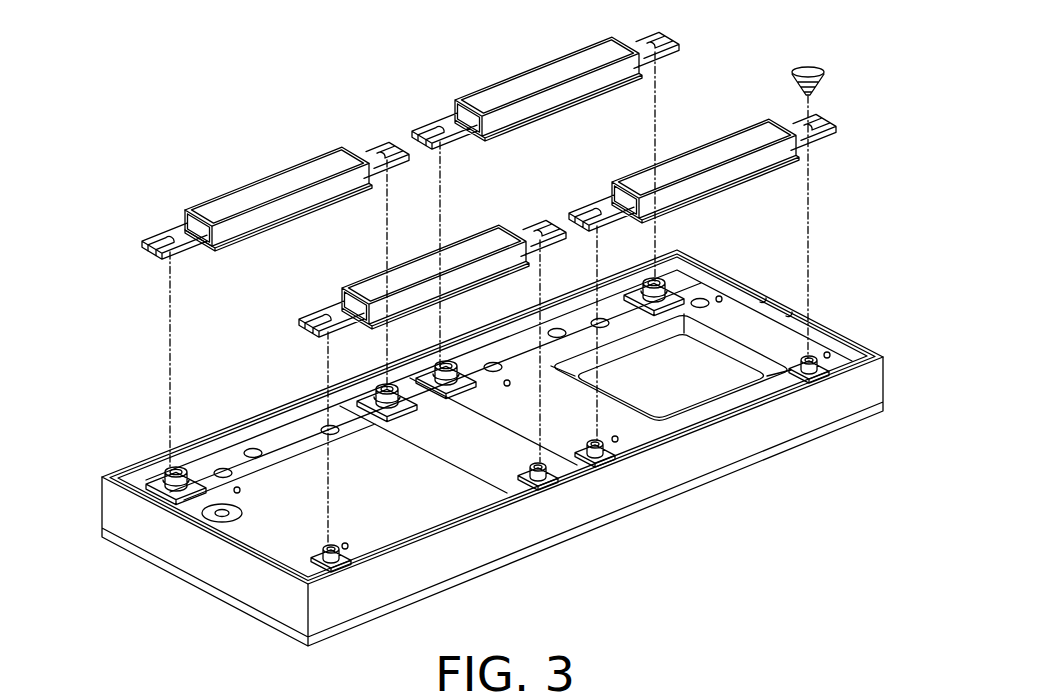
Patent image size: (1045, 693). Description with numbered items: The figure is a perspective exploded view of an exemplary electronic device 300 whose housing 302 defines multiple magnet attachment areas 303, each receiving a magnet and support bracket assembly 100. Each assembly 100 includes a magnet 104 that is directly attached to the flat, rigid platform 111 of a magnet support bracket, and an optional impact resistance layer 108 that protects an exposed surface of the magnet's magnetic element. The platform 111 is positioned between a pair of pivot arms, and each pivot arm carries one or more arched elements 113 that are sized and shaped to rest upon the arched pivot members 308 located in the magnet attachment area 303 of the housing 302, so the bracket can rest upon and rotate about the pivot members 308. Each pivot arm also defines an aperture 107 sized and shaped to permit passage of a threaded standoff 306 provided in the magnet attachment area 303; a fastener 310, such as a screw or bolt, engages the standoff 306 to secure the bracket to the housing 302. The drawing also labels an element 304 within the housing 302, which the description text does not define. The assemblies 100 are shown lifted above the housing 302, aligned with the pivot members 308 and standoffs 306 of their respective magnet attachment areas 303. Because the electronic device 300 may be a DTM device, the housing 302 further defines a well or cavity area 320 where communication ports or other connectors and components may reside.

The magnet and support bracket assembly 100 is at (478, 168).
The magnet 104 is at (255, 215).
The aperture 107 is at (165, 228).
The impact resistance layer 108 is at (232, 193).
The platform 111 is at (335, 200).
The arched element 113 is at (150, 237).
The electronic device 300 is at (499, 426).
The housing 302 is at (360, 527).
The magnet attachment area 303 is at (433, 512).
The terminal post 304 is at (668, 294).
The threaded standoff 306 is at (232, 492).
The pivot member 308 is at (666, 288).
The fastener 310 is at (825, 78).
The well or cavity area 320 is at (713, 372).